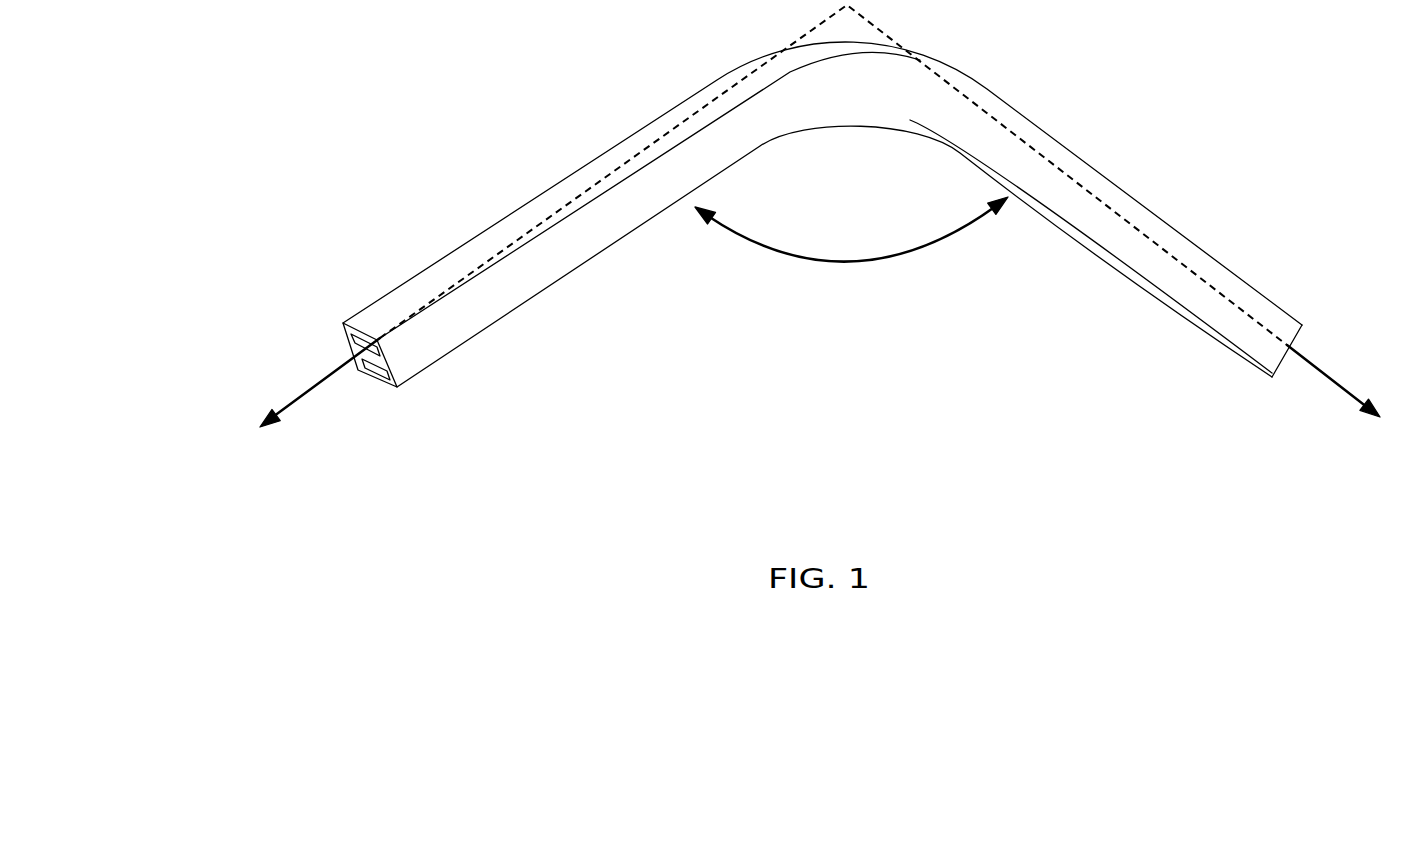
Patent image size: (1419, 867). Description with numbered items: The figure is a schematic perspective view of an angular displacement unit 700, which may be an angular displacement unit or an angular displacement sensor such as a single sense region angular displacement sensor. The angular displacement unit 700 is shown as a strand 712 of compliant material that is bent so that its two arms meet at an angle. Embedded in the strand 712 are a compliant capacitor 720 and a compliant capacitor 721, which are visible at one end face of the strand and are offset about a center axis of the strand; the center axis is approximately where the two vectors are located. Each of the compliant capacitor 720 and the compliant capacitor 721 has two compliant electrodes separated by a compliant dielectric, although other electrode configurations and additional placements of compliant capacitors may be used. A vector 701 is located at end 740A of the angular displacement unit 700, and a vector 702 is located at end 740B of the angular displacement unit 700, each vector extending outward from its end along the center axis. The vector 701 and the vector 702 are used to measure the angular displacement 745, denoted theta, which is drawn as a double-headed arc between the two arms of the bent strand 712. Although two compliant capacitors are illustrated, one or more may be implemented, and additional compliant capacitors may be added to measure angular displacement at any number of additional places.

The angular displacement unit 700 is at (292, 90).
The strand 712 is at (608, 247).
The compliant capacitor 720 is at (357, 332).
The compliant capacitor 721 is at (378, 392).
The end 740A is at (342, 345).
The end 740B is at (1279, 380).
The vector 701 is at (284, 404).
The vector 702 is at (1328, 372).
The angular displacement 745 is at (847, 263).